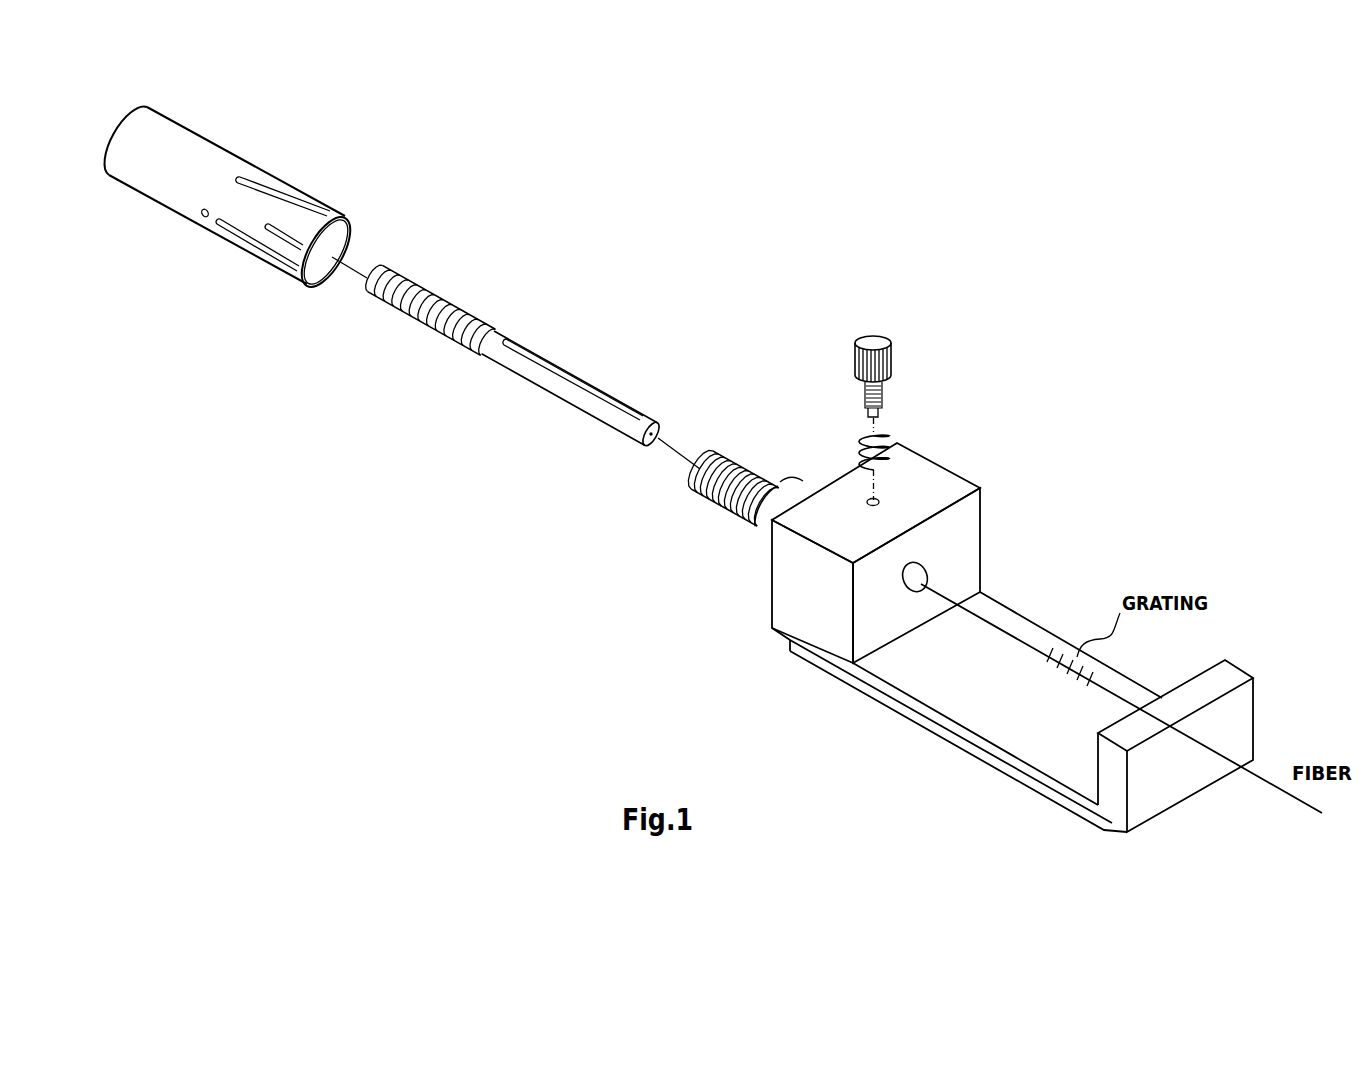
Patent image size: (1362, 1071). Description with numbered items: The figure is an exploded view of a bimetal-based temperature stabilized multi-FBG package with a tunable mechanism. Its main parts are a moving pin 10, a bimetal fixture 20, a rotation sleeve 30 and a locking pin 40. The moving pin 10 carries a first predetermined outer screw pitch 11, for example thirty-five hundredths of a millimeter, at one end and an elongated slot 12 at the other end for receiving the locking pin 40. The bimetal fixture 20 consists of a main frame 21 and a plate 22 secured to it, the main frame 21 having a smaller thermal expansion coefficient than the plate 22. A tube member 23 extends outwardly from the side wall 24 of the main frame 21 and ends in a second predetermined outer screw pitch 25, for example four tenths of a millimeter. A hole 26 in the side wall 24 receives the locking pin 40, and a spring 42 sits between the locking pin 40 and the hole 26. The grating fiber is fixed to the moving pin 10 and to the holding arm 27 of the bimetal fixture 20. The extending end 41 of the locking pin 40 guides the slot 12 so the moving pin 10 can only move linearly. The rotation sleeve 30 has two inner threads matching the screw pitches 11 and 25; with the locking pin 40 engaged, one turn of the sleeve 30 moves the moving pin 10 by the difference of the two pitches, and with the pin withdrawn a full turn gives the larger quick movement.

The moving pin 10 is at (533, 343).
The first predetermined outer screw pitch 11 is at (447, 297).
The elongated slot 12 is at (563, 370).
The bimetal fixture 20 is at (831, 528).
The main frame 21 is at (1013, 750).
The plate 22 is at (1027, 782).
The tube member 23 is at (802, 490).
The side wall 24 is at (787, 585).
The second predetermined outer screw pitch 25 is at (747, 453).
The hole 26 is at (882, 500).
The holding arm 27 is at (1217, 682).
The rotation sleeve 30 is at (218, 153).
The locking pin 40 is at (874, 394).
The extending end 41 is at (867, 407).
The spring 42 is at (890, 443).